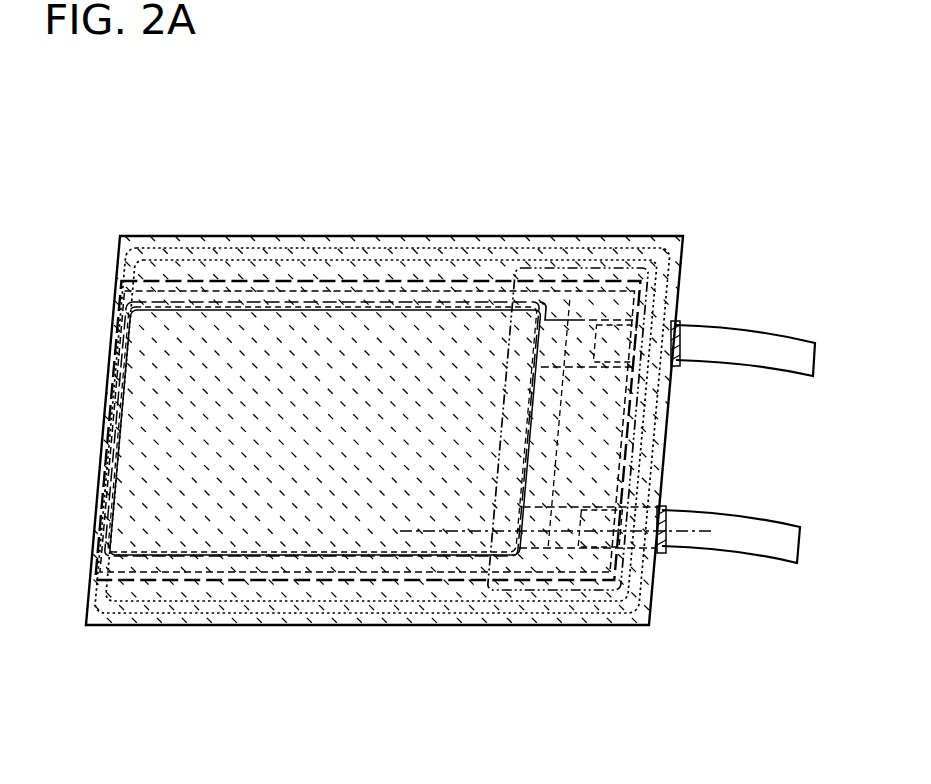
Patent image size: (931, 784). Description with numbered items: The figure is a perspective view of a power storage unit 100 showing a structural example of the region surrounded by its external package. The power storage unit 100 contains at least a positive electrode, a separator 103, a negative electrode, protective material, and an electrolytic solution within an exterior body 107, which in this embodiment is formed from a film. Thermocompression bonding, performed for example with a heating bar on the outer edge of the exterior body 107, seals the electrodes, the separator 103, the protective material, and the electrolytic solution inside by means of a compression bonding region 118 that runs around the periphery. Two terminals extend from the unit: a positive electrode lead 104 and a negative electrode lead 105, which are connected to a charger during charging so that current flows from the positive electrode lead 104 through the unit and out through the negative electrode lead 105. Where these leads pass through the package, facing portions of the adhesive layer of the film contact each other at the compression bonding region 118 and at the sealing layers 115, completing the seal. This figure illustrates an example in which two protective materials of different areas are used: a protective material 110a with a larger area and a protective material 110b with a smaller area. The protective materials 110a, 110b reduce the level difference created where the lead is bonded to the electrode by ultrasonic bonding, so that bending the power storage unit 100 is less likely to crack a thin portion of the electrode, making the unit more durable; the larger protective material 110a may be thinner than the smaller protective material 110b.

The power storage unit 100 is at (136, 212).
The separator 103 is at (268, 293).
The positive electrode lead 104 is at (779, 540).
The negative electrode lead 105 is at (755, 350).
The exterior body 107 is at (672, 240).
The protective material 110a is at (415, 280).
The protective material 110b is at (540, 268).
The sealing layer 115 is at (680, 324).
The compression bonding region 118 is at (297, 607).